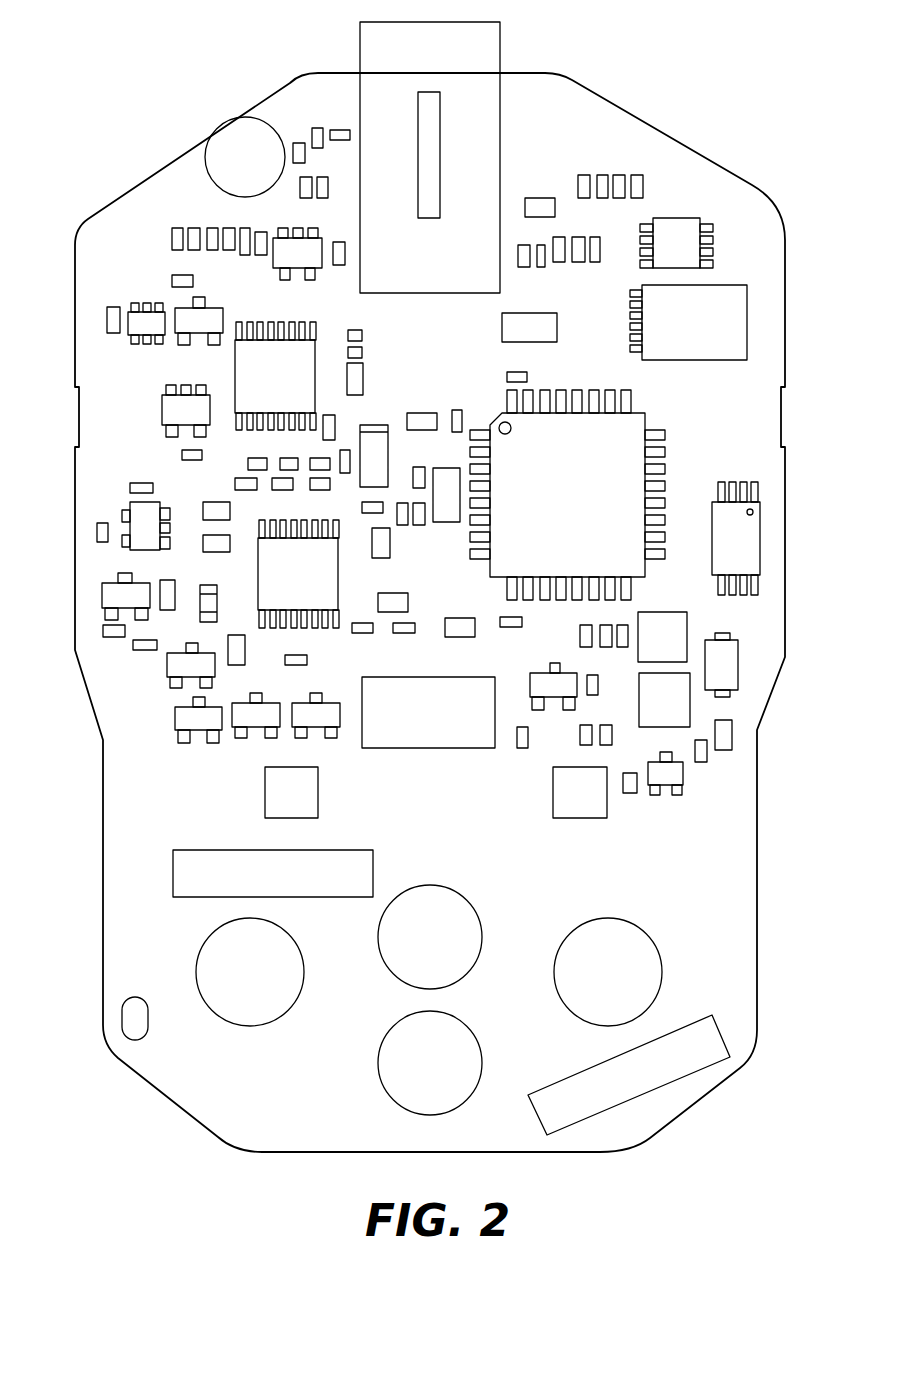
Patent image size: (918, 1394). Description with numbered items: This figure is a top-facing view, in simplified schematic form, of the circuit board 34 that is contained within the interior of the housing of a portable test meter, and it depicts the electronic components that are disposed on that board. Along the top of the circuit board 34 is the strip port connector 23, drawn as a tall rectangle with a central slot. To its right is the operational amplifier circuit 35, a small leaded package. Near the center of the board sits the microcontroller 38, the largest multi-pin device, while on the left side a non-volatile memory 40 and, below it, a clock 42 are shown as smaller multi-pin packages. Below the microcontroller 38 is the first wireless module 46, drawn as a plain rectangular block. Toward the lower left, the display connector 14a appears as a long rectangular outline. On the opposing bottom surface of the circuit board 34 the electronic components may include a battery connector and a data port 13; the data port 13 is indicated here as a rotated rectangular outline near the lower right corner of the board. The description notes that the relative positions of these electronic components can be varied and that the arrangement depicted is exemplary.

The data port 13 is at (657, 1072).
The display connector 14a is at (187, 871).
The strip port connector 23 is at (493, 49).
The circuit board 34 is at (637, 123).
The operational amplifier circuit 35 is at (682, 230).
The microcontroller 38 is at (622, 430).
The non-volatile memory 40 is at (260, 366).
The clock 42 is at (310, 578).
The first wireless module 46 is at (442, 748).